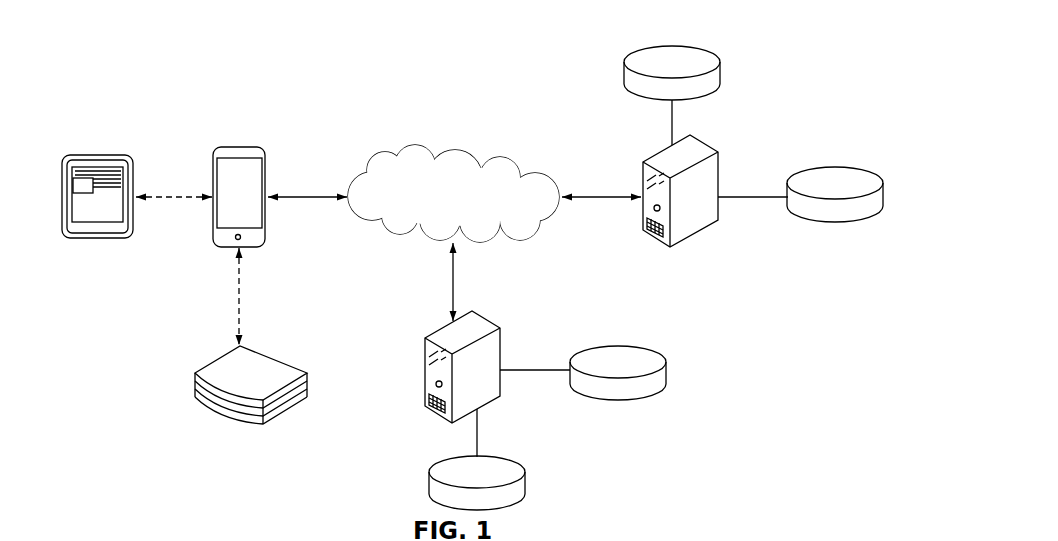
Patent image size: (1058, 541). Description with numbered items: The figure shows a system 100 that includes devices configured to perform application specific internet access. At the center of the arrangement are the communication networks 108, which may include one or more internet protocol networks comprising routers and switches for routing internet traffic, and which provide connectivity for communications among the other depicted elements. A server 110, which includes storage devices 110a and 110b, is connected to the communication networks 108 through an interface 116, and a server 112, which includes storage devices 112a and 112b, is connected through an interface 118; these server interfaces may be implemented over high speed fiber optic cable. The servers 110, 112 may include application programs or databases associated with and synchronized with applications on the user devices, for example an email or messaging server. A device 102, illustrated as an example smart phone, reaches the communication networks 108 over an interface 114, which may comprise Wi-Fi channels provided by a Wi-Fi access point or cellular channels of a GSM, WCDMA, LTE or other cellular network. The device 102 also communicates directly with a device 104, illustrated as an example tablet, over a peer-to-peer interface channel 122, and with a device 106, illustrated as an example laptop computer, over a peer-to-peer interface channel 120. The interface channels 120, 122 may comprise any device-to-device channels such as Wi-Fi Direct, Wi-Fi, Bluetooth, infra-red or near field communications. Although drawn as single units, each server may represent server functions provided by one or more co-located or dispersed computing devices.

The system 100 is at (821, 52).
The device 102 is at (240, 147).
The device 104 is at (95, 154).
The device 106 is at (222, 408).
The communication networks 108 is at (455, 150).
The server 110 is at (719, 172).
The storage device 110a is at (672, 46).
The storage device 110b is at (838, 168).
The server 112 is at (501, 348).
The storage device 112a is at (618, 347).
The storage device 112b is at (430, 487).
The interface 114 is at (305, 195).
The interface 116 is at (602, 195).
The interface 118 is at (455, 283).
The interface channel 120 is at (241, 297).
The interface channel 122 is at (173, 198).